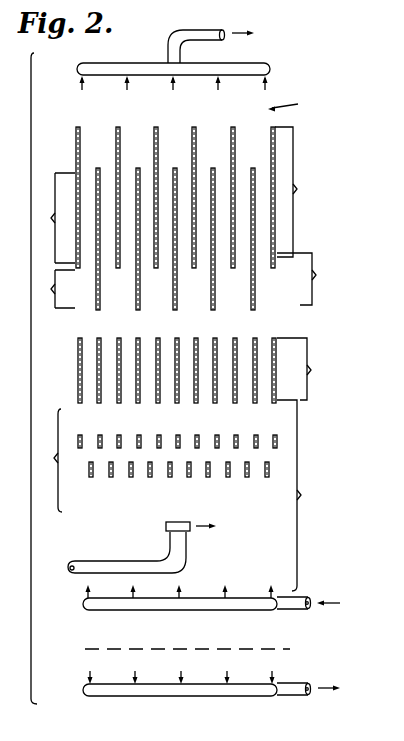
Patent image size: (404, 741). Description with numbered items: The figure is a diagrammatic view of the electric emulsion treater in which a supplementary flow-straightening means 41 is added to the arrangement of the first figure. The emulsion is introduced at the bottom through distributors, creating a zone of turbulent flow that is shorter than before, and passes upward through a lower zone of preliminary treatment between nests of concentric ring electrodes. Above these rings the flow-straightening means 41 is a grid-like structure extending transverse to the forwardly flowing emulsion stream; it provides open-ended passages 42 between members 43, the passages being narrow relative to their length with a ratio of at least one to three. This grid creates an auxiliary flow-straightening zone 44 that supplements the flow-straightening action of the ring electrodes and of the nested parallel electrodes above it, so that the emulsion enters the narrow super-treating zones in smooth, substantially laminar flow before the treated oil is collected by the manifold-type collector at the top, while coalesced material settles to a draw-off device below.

The auxiliary flow-straightening zone 44 is at (225, 372).
The flow-straightening means 41 is at (283, 335).
The members 43 is at (156, 404).
The open-ended passages 42 is at (202, 388).